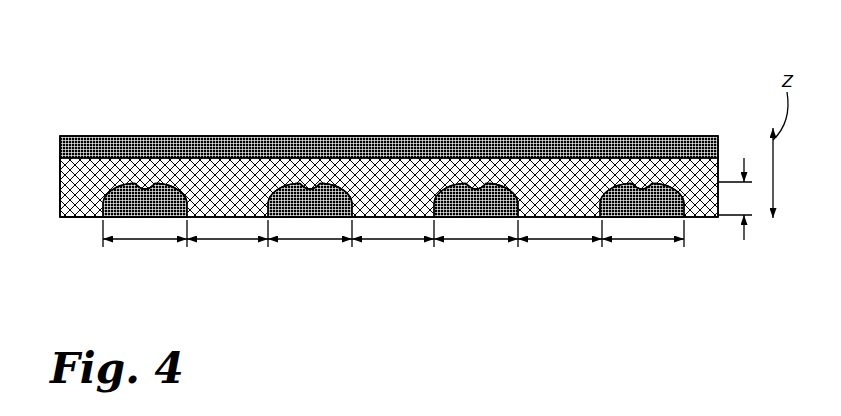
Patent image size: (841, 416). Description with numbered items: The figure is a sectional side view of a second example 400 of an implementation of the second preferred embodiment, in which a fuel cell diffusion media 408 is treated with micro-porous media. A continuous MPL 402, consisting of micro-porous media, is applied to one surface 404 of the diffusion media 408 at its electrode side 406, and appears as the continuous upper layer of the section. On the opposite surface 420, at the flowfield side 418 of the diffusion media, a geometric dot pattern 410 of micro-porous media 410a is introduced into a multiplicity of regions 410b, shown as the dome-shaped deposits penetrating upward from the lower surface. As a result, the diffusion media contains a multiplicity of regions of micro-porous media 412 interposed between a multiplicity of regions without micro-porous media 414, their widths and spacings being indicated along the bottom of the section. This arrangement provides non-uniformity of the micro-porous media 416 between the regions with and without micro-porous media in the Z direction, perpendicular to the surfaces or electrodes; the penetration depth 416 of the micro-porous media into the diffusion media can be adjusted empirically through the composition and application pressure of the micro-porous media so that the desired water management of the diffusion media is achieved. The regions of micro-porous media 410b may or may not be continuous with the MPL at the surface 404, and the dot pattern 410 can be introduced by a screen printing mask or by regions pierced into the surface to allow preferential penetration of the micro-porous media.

The second example 400 is at (665, 90).
The continuous MPL 402 is at (52, 138).
The surface 404 is at (235, 150).
The electrode side 406 is at (378, 137).
The diffusion media 408 is at (56, 188).
The geometric dot pattern 410 is at (266, 214).
The micro-porous media 410a is at (163, 184).
The regions 410b is at (130, 184).
The regions of micro-porous media 412 is at (152, 242).
The regions without micro-porous media 414 is at (247, 242).
The penetration depth 416 is at (738, 199).
The flowfield side 418 is at (80, 218).
The opposite surface 420 is at (97, 218).